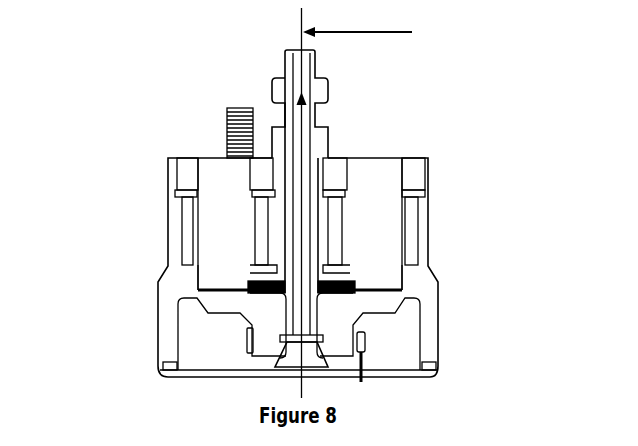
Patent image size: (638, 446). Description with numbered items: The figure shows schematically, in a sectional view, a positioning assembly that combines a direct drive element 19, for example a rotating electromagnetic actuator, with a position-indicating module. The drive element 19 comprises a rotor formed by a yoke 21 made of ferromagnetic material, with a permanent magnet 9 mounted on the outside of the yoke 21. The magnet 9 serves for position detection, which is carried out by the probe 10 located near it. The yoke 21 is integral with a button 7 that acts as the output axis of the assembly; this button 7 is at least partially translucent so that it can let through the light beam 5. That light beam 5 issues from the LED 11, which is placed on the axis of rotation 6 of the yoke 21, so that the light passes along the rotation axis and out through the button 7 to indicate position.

The direct drive element 19 is at (156, 246).
The button 7 is at (315, 113).
The light beam 5 is at (302, 113).
The axis of rotation 6 is at (368, 33).
The yoke 21 is at (248, 310).
The permanent magnet 9 is at (242, 342).
The probe 10 is at (365, 342).
The LED 11 is at (438, 368).